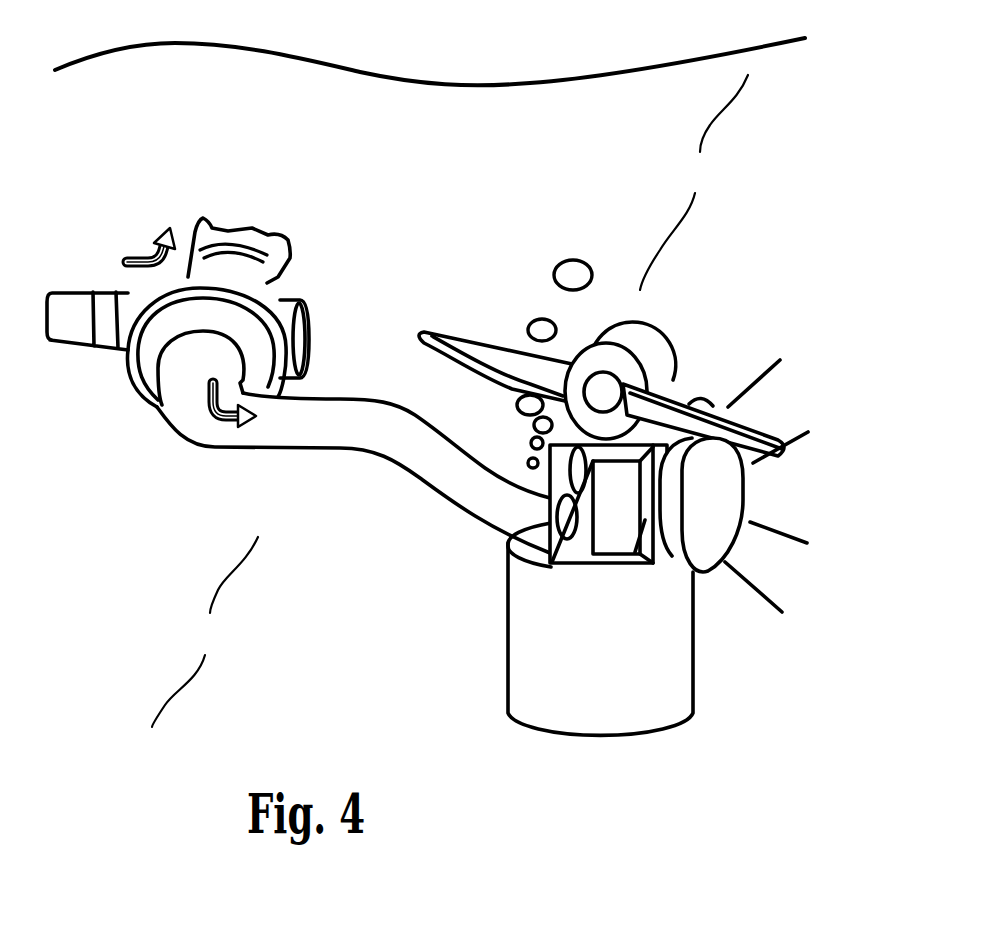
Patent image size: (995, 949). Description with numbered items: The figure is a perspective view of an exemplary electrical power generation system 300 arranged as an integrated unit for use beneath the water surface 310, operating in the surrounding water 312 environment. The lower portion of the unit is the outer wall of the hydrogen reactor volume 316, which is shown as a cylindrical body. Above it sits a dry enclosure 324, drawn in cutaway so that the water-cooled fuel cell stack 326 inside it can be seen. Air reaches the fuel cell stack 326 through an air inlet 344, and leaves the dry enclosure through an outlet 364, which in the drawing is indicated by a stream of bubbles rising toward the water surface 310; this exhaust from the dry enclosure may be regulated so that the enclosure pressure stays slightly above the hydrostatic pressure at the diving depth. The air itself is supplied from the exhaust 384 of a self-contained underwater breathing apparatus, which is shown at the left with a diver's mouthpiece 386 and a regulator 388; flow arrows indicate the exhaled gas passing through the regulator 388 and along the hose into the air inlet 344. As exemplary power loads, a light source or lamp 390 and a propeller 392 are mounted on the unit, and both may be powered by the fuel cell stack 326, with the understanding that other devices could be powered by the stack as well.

The system 300 is at (708, 741).
The water surface 310 is at (417, 81).
The water 312 is at (450, 401).
The hydrogen reactor volume 316 is at (560, 642).
The dry enclosure 324 is at (633, 564).
The water-cooled fuel cell stack 326 is at (620, 533).
The air inlet 344 is at (573, 503).
The outlet 364 is at (568, 467).
The exhaust 384 is at (200, 393).
The diver's mouthpiece 386 is at (282, 238).
The regulator 388 is at (257, 308).
The lamp 390 is at (720, 490).
The propeller 392 is at (617, 353).